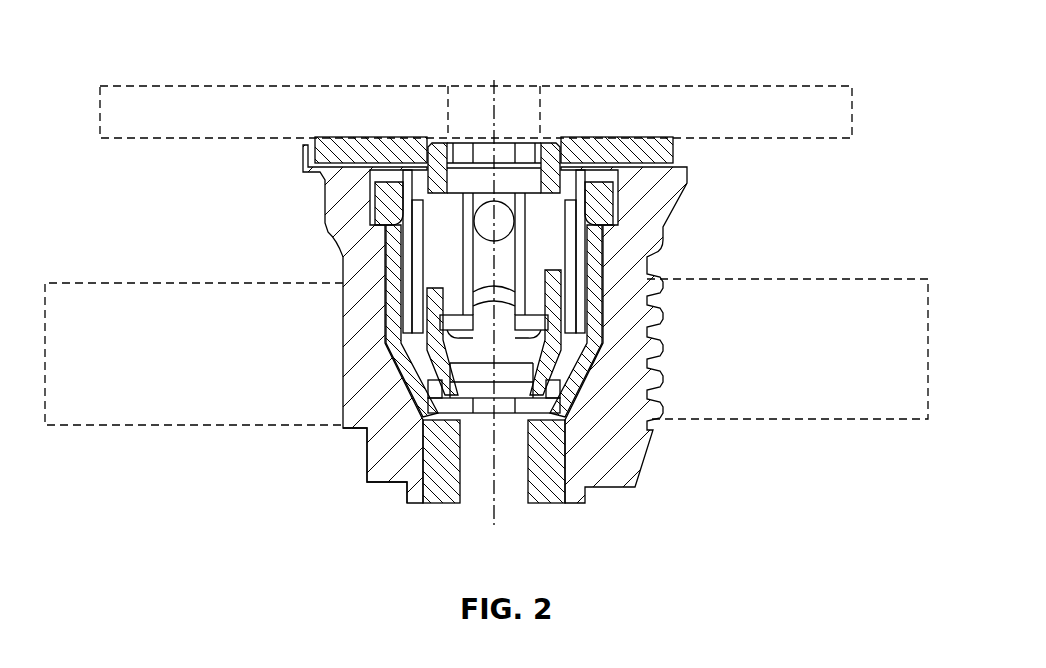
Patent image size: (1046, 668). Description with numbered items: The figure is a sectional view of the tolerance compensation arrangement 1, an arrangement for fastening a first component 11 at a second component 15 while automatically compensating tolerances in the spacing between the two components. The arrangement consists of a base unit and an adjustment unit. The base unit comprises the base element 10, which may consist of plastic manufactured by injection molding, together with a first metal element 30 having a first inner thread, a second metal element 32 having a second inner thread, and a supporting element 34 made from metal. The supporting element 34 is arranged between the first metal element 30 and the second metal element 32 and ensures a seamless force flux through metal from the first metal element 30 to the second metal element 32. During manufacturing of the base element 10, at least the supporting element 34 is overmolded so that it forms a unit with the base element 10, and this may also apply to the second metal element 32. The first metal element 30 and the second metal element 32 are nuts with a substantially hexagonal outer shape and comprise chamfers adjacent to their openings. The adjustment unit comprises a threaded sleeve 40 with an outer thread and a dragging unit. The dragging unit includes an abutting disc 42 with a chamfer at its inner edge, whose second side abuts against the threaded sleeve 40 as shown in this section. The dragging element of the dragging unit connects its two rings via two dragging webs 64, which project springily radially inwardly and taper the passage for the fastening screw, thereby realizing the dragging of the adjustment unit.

The tolerance compensation arrangement 1 is at (726, 113).
The base element 10 is at (350, 332).
The first component 11 is at (887, 395).
The second component 15 is at (808, 130).
The first metal element 30 is at (378, 214).
The second metal element 32 is at (443, 476).
The supporting element 34 is at (362, 420).
The threaded sleeve 40 is at (568, 258).
The abutting disc 42 is at (623, 142).
The dragging webs 64 is at (492, 218).